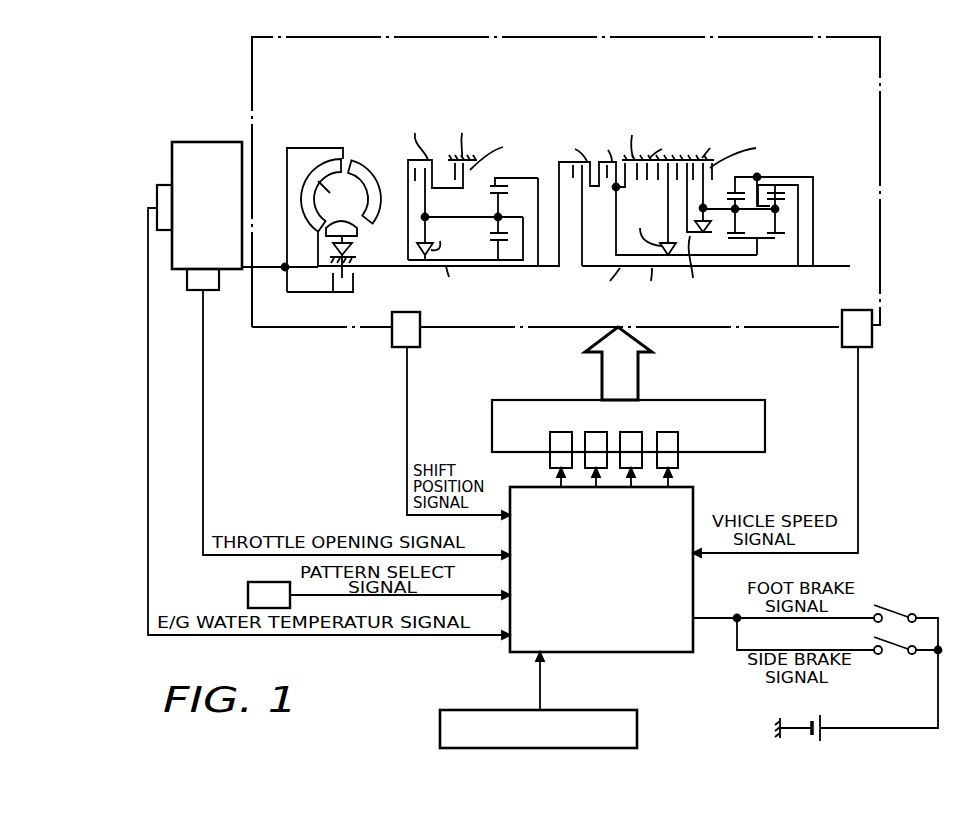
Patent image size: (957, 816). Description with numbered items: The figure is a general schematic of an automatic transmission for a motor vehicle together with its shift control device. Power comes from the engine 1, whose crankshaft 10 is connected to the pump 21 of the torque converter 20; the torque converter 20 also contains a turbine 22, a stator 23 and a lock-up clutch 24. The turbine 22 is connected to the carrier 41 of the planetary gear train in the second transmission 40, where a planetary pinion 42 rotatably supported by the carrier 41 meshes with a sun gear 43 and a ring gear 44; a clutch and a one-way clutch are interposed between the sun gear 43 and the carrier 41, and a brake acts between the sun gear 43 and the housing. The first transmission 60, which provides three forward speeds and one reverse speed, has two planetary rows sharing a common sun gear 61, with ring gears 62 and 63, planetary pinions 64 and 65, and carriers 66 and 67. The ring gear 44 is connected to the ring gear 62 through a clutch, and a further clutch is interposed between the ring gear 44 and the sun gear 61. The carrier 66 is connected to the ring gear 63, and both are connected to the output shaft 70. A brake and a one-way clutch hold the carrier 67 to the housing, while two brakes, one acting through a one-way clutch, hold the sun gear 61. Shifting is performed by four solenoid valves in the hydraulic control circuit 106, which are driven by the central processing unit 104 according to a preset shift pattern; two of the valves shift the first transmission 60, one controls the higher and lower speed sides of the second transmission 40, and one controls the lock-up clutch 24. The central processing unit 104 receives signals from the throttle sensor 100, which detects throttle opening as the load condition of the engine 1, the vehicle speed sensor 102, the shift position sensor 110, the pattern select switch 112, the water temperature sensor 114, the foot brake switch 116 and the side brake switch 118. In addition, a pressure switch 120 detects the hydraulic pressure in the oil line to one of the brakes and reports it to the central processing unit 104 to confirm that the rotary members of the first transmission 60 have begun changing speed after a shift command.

The engine 1 is at (212, 142).
The crankshaft 10 is at (268, 276).
The torque converter 20 is at (423, 203).
The pump 21 is at (373, 178).
The turbine 22 is at (336, 196).
The stator 23 is at (357, 233).
The lock-up clutch 24 is at (303, 295).
The second transmission 40 is at (468, 191).
The carrier 41 is at (508, 217).
The planetary pinion 42 is at (488, 198).
The sun gear 43 is at (493, 238).
The ring gear 44 is at (496, 180).
The first transmission 60 is at (654, 148).
The sun gear 61 is at (759, 240).
The ring gear 62 is at (783, 191).
The ring gear 63 is at (742, 192).
The planetary pinion 64 is at (780, 205).
The planetary pinion 65 is at (738, 211).
The carrier 66 is at (776, 213).
The carrier 67 is at (722, 192).
The output shaft 70 is at (779, 224).
The throttle sensor 100 is at (190, 291).
The vehicle speed sensor 102 is at (873, 343).
The central processing unit 104 is at (583, 653).
The hydraulic control circuit 106 is at (767, 422).
The shift position sensor 110 is at (413, 350).
The pattern select switch 112 is at (248, 597).
The water temperature sensor 114 is at (156, 198).
The brake switch 116 is at (900, 606).
The brake switch 118 is at (889, 657).
The pressure switch 120 is at (637, 727).